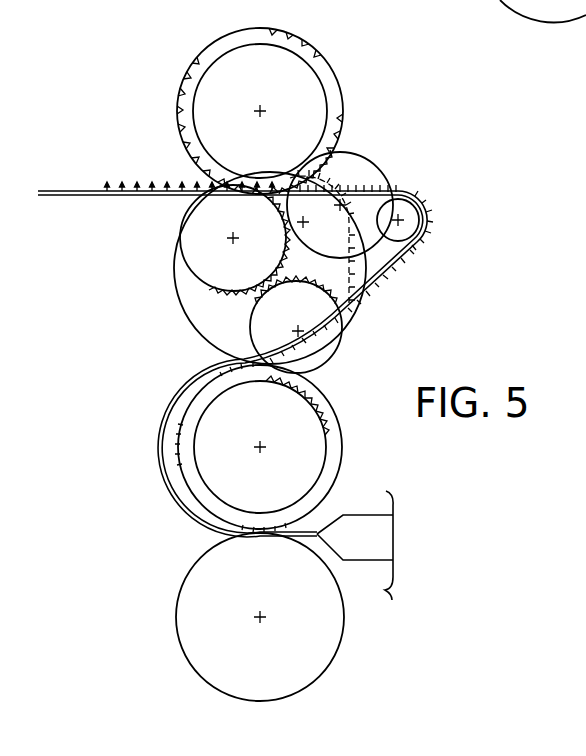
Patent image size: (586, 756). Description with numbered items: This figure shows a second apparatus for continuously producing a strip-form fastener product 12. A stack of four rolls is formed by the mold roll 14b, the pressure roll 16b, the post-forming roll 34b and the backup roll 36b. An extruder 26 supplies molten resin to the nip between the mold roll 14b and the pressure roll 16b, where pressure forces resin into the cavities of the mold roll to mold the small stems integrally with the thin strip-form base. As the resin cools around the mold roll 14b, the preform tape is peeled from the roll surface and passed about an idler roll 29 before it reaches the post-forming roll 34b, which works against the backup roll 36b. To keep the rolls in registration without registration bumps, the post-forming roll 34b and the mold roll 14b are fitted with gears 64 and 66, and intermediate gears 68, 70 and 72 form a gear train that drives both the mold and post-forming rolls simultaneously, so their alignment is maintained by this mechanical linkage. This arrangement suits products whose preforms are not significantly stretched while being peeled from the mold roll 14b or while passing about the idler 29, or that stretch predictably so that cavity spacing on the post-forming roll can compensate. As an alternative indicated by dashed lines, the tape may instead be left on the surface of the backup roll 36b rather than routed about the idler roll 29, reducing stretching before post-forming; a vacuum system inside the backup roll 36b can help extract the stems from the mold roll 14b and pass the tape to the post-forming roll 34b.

The strip-form fastener product 12 is at (82, 197).
The mold roll 14b is at (180, 480).
The pressure roll 16b is at (248, 663).
The extruder 26 is at (356, 548).
The idler roll 29 is at (408, 242).
The post-forming roll 34b is at (332, 72).
The backup roll 36b is at (177, 308).
The gear 64 is at (233, 50).
The gear 66 is at (197, 423).
The intermediate gear 68 is at (286, 313).
The intermediate gear 70 is at (183, 228).
The intermediate gear 72 is at (382, 165).